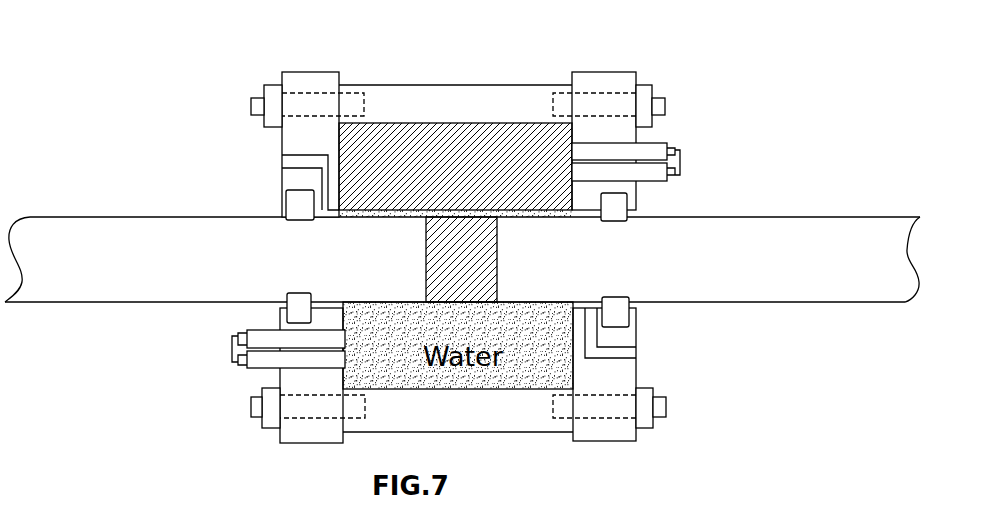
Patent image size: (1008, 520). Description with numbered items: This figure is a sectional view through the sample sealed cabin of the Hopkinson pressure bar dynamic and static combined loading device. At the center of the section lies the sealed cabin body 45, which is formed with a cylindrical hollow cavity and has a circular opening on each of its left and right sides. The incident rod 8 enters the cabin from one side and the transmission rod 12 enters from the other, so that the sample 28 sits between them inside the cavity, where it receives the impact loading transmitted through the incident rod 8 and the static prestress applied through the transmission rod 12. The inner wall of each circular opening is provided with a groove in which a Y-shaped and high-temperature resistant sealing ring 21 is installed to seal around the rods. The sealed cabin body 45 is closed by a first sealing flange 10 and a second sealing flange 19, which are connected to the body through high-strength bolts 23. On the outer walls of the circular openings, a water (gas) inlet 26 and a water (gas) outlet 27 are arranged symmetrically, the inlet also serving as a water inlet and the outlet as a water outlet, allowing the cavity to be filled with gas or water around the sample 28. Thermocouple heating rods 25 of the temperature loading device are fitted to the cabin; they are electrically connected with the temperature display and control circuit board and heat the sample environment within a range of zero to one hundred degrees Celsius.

The incident rod 8 is at (102, 237).
The transmission rod 12 is at (756, 229).
The sample 28 is at (498, 283).
The second sealing flange 19 is at (305, 75).
The first sealing flange 10 is at (602, 72).
The sealed cabin body 45 is at (455, 117).
The water (gas) outlet 27 is at (282, 166).
The Y-shaped and high-temperature resistant sealing ring 21 is at (284, 211).
The water (gas) inlet 26 is at (637, 352).
The thermocouple heating rod 25 is at (232, 351).
The high-strength bolt 23 is at (245, 410).